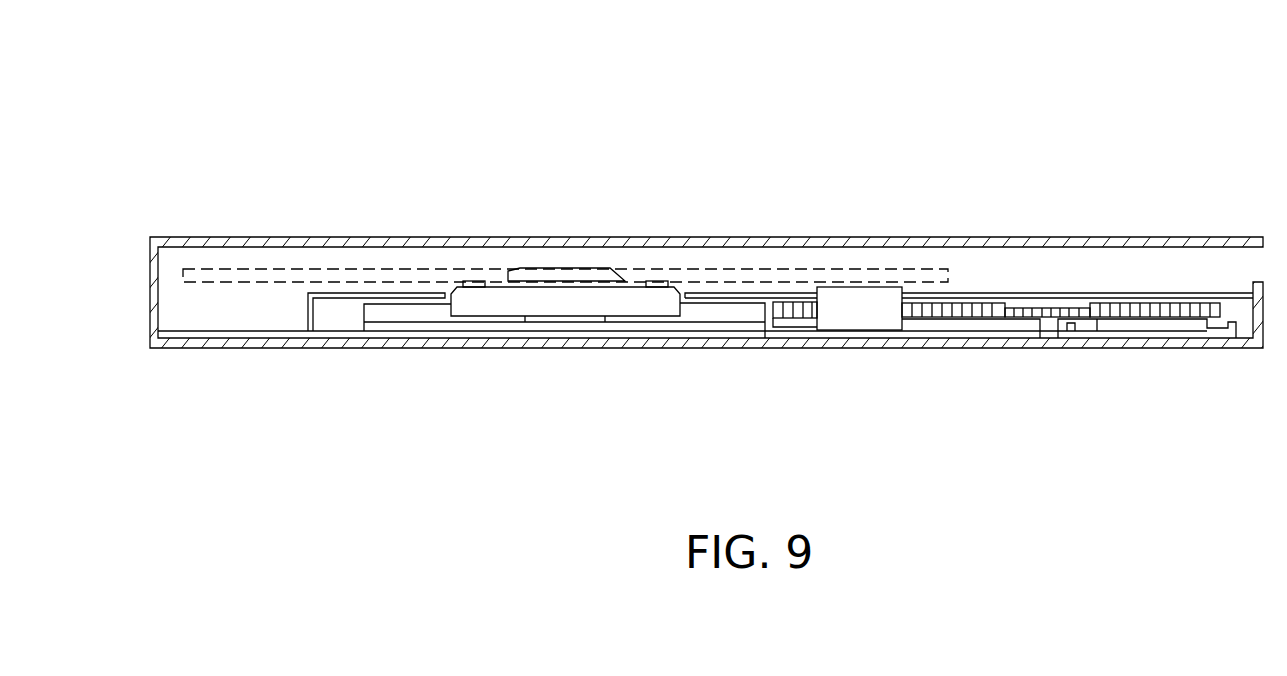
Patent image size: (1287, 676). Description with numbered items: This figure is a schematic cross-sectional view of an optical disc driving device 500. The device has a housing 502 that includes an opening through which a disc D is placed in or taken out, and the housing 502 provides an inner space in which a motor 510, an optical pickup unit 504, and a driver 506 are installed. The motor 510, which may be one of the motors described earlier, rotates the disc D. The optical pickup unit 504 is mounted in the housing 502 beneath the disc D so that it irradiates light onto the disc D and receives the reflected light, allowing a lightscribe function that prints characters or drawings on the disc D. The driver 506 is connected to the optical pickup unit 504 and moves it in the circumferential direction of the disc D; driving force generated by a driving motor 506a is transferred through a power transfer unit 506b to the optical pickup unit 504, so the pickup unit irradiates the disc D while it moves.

The optical disc driving device 500 is at (357, 48).
The housing 502 is at (358, 237).
The disc D is at (713, 270).
The motor 510 is at (477, 316).
The optical pickup unit 504 is at (863, 317).
The driver 506 is at (1004, 392).
The driving motor 506a is at (1112, 368).
The power transfer unit 506b is at (987, 317).